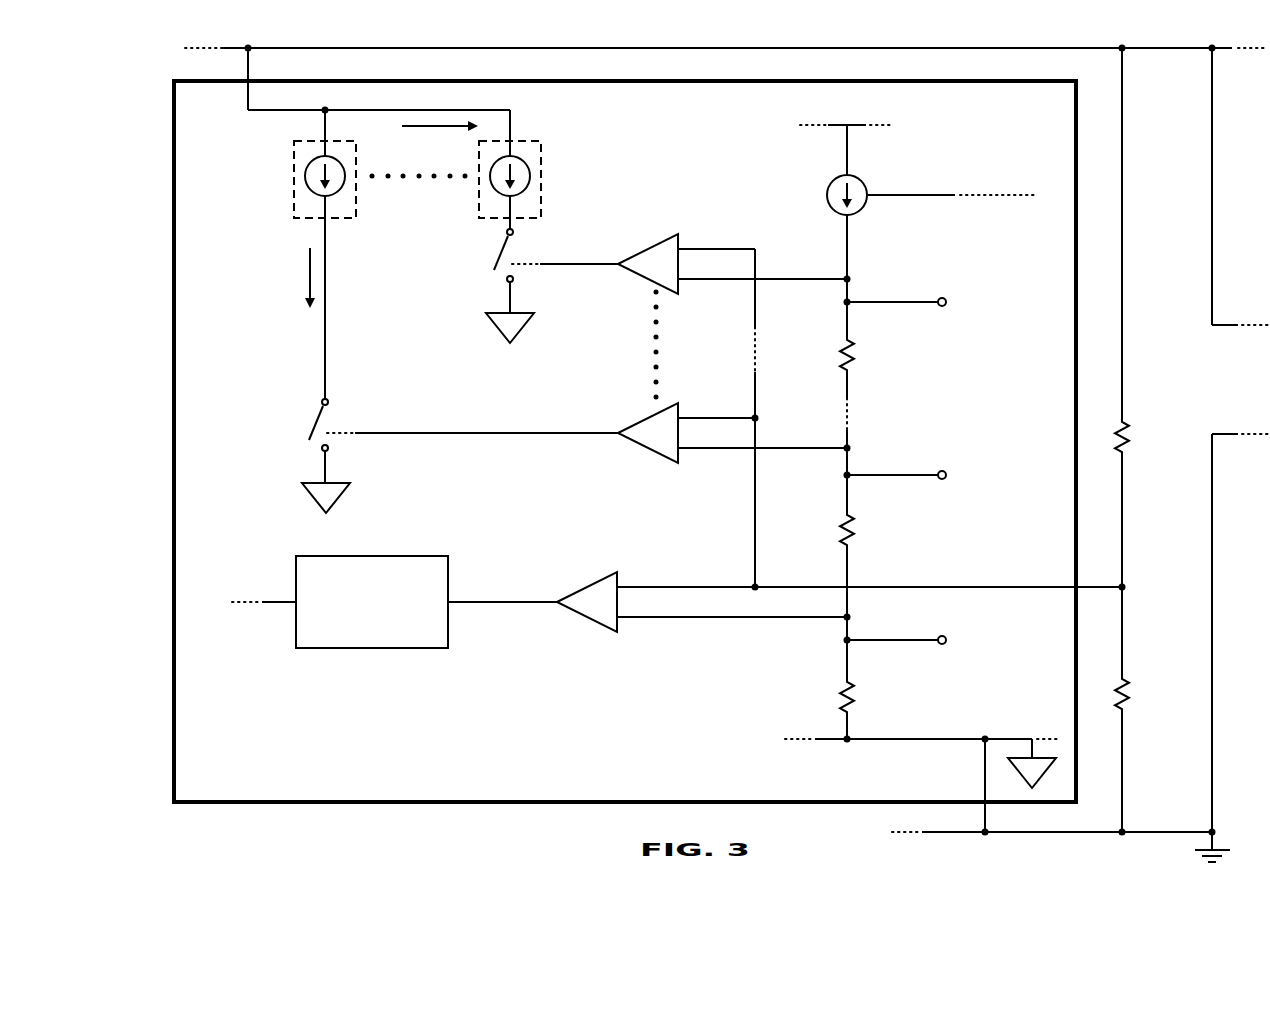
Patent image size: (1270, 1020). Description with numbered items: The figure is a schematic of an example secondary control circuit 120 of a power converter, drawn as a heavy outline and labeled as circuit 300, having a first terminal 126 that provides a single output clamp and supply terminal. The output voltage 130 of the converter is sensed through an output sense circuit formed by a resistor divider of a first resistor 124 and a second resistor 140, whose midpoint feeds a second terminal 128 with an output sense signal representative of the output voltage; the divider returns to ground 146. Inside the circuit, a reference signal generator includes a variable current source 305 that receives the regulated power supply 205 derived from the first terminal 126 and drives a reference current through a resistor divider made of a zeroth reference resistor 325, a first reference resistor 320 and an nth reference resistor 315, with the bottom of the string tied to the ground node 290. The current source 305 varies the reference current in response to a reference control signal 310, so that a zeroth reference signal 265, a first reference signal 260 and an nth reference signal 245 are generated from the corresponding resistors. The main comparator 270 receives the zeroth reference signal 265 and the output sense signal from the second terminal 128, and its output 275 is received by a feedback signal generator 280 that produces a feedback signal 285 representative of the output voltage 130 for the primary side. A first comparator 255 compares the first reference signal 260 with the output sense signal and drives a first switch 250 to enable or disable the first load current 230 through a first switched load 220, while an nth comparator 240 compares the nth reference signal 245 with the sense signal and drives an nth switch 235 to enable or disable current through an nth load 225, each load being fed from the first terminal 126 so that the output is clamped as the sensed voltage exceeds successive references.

The secondary control circuit 120 is at (218, 811).
The resistor R1 124 is at (1140, 449).
The first terminal 126 is at (255, 65).
The second terminal 128 is at (1130, 585).
The output voltage VO 130 is at (1207, 362).
The resistor R2 140 is at (1138, 678).
The ground 146 is at (1222, 843).
The regulated power supply VREG 205 is at (830, 131).
The current source AL1 220 is at (415, 135).
The load ALn 225 is at (545, 152).
The current I1 230 is at (298, 292).
The switch SALn 235 is at (486, 268).
The comparator 240 is at (640, 284).
The reference signal VREFn 245 is at (945, 318).
The switch SAL1 250 is at (300, 440).
The comparator 255 is at (640, 456).
The reference signal VREF1 260 is at (945, 491).
The reference signal VREF0 265 is at (945, 656).
The comparator 270 is at (585, 626).
The output of comparator 275 is at (510, 610).
The feedback signal generator 280 is at (388, 553).
The feedback signal 285 is at (282, 598).
The ground node GND 290 is at (965, 750).
The current limit circuit 300 is at (152, 197).
The variable current source 305 is at (825, 212).
The reference control signal 310 is at (930, 190).
The resistor RREFn 315 is at (835, 360).
The resistor RREF1 320 is at (835, 533).
The resistor RREF0 325 is at (835, 700).